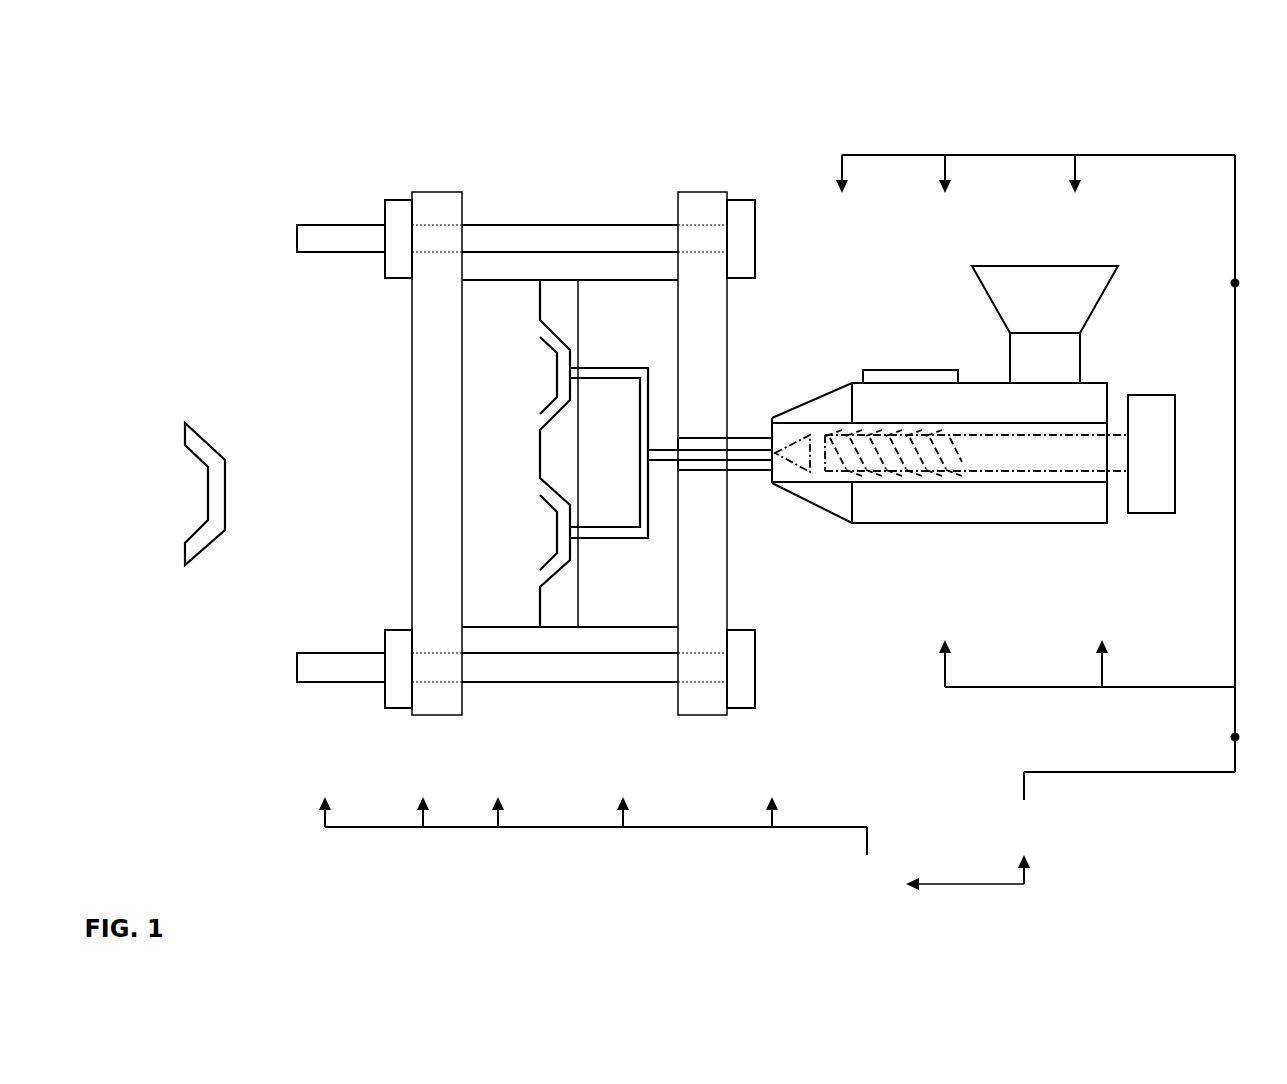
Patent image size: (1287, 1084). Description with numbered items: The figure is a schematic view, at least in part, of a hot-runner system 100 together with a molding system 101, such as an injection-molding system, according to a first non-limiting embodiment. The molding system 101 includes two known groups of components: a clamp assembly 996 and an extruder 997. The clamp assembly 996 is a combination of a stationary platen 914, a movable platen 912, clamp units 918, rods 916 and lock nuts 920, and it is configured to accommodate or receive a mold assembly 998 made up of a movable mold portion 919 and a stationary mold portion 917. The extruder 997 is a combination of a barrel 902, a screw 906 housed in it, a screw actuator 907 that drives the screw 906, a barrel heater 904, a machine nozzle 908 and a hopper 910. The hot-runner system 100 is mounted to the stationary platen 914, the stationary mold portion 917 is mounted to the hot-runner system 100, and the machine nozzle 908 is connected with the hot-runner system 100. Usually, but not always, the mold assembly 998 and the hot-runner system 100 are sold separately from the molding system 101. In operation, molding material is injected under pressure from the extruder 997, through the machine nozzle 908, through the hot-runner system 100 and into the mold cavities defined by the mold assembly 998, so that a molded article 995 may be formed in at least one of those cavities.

The hot-runner system 100 is at (622, 280).
The molding system 101 is at (1024, 884).
The barrel 902 is at (980, 523).
The barrel heater 904 is at (910, 370).
The screw 906 is at (951, 453).
The screw actuator 907 is at (1152, 513).
The machine nozzle 908 is at (743, 438).
The hopper 910 is at (1045, 265).
The movable platen 912 is at (437, 715).
The stationary platen 914 is at (703, 715).
The rods 916 is at (525, 682).
The stationary mold portion 917 is at (520, 280).
The clamp units 918 is at (740, 708).
The movable mold portion 919 is at (563, 280).
The lock nuts 920 is at (400, 707).
The molded article 995 is at (205, 438).
The clamp assembly 996 is at (671, 848).
The extruder 997 is at (1118, 828).
The mold assembly 998 is at (330, 102).